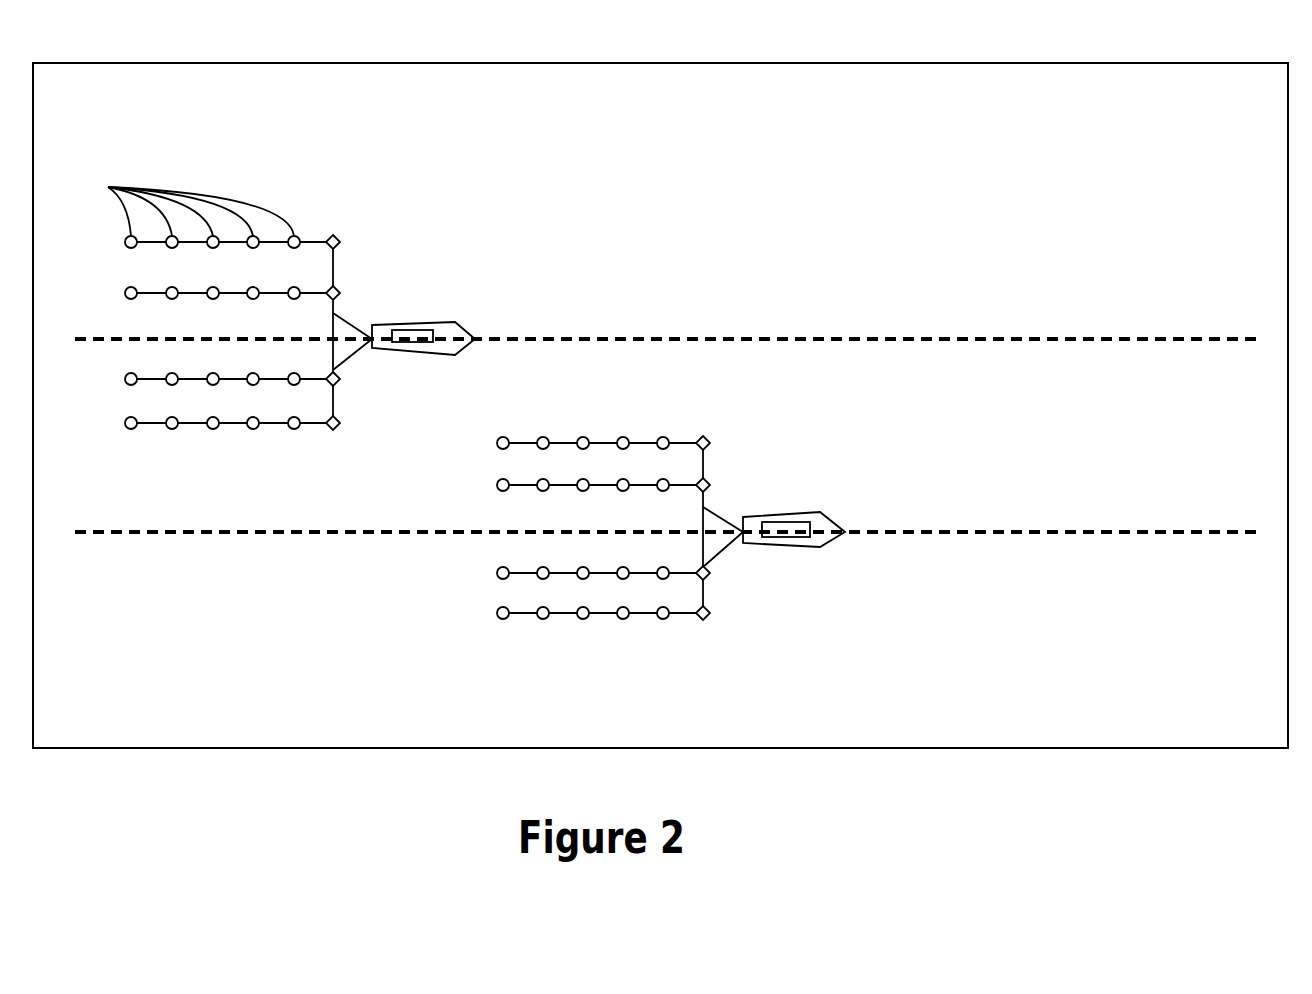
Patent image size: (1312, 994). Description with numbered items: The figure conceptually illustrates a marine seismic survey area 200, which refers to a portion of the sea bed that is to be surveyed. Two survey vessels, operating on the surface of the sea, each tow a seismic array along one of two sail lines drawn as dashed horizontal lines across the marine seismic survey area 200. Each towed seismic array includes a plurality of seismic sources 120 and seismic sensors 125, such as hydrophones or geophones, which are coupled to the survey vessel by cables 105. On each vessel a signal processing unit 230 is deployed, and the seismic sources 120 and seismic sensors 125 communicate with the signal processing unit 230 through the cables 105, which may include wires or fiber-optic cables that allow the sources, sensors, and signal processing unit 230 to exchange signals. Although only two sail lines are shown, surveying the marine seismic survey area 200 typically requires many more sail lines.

The marine seismic survey area 200 is at (890, 63).
The seismic sensors 125 is at (182, 205).
The cables 105 is at (313, 242).
The seismic sources 120 is at (333, 234).
The signal processing unit 230 is at (428, 330).